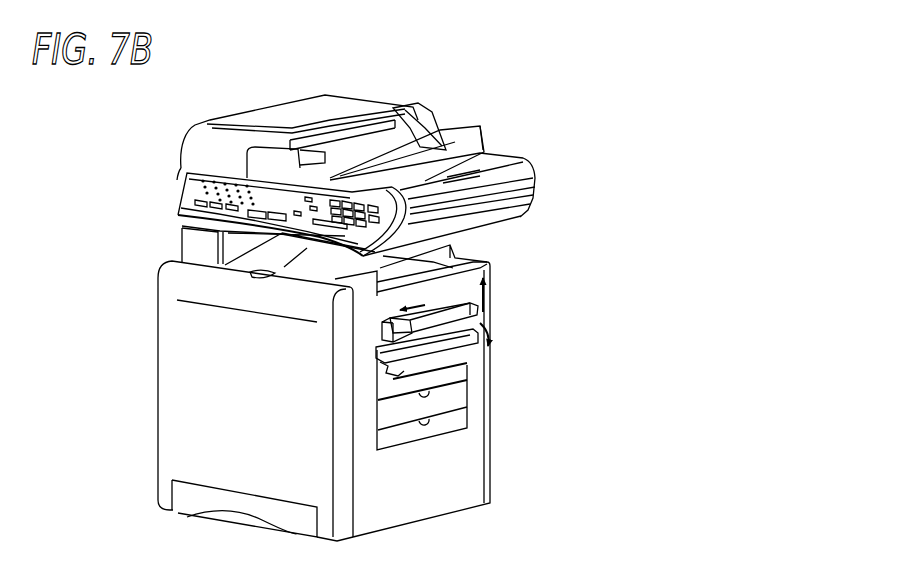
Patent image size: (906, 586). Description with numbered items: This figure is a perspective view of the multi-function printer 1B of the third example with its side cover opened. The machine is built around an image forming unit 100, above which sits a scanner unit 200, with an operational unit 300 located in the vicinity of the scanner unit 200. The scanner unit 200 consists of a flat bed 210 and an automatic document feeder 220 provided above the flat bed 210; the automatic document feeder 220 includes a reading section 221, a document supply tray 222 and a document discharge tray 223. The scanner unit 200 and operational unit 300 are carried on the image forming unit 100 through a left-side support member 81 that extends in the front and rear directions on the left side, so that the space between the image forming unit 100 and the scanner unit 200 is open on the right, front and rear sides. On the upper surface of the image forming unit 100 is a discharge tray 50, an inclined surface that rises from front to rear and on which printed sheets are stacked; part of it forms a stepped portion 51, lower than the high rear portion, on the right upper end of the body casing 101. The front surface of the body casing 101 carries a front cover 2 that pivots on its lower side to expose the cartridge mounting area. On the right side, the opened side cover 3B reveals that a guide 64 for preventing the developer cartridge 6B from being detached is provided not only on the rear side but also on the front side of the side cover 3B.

The multi-function printer 1B is at (604, 66).
The scanner unit 200 is at (487, 106).
The automatic document feeder 220 is at (362, 90).
The reading section 221 is at (290, 107).
The document supply tray 222 is at (417, 128).
The document discharge tray 223 is at (430, 177).
The operational unit 300 is at (184, 184).
The flat bed 210 is at (527, 189).
The left-side support member 81 is at (190, 244).
The discharge tray 50 is at (430, 257).
The stepped portion 51 is at (476, 273).
The image forming unit 100 is at (529, 297).
The front cover 2 is at (178, 385).
The side cover 3B is at (457, 418).
The body casing 101 is at (500, 357).
The guide 64 is at (481, 310).
The developer cartridge 6B is at (382, 328).